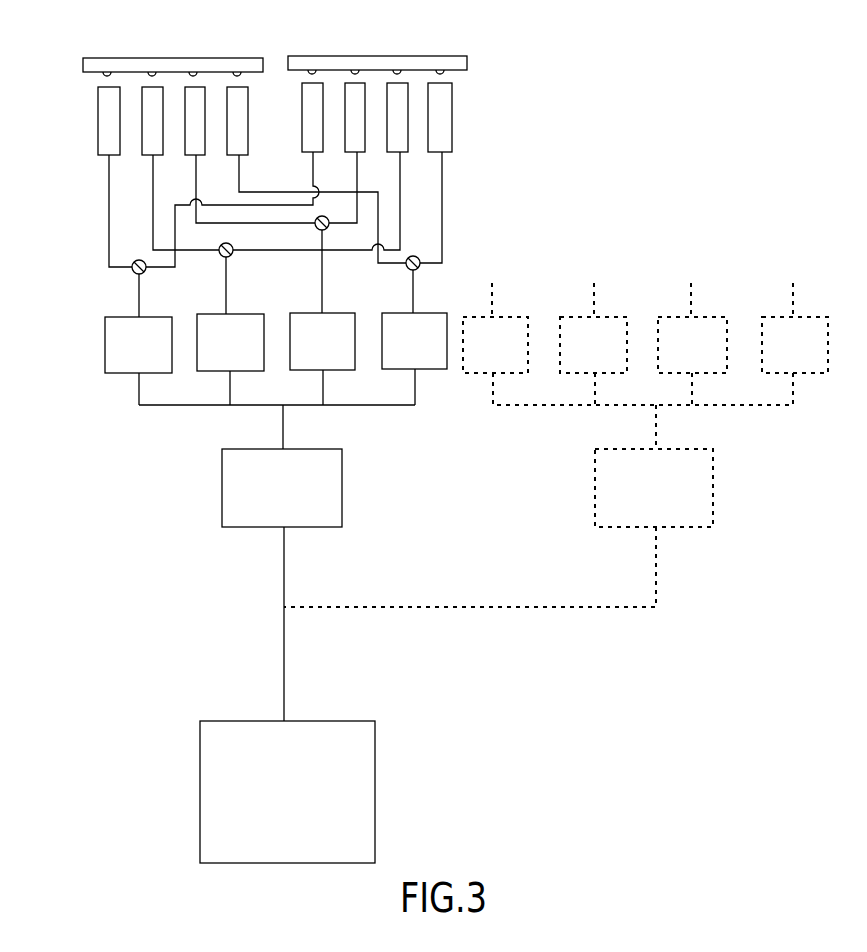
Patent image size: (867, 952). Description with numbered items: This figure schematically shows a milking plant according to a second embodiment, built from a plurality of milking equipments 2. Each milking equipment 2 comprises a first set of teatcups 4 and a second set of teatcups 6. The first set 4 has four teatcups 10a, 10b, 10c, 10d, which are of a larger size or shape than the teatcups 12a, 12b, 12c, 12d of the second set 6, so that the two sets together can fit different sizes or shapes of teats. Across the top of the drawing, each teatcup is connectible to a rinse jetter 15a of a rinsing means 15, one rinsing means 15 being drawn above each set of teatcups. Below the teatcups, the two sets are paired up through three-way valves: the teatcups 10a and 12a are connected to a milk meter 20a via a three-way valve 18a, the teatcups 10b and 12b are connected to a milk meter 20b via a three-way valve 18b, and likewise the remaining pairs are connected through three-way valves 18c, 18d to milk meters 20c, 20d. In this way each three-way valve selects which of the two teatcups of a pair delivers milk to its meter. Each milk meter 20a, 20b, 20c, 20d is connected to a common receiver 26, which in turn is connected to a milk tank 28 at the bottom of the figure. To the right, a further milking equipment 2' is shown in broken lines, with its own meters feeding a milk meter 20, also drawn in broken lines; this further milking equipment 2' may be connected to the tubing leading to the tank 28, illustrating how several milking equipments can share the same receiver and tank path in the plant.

The milking equipment 2 is at (307, 102).
The further milking equipment 2' is at (645, 353).
The first set of teatcups 4 is at (74, 137).
The second set of teatcups 6 is at (477, 132).
The teatcup 10a is at (108, 135).
The teatcup 10b is at (152, 135).
The teatcup 10c is at (196, 135).
The teatcup 10d is at (238, 135).
The teatcup 12a is at (312, 133).
The teatcup 12b is at (355, 133).
The teatcup 12c is at (398, 133).
The teatcup 12d is at (440, 133).
The rinsing means 15 is at (247, 65).
The rinse jetter 15a is at (105, 78).
The three-way valve 18a is at (132, 270).
The three-way valve 18b is at (222, 256).
The three-way valve 18c is at (316, 227).
The three-way valve 18d is at (406, 267).
The milk meter 20a is at (132, 357).
The milk meter 20b is at (226, 355).
The milk meter 20c is at (318, 353).
The milk meter 20d is at (412, 352).
The milk meter 20 is at (695, 502).
The receiver 26 is at (318, 507).
The milk tank 28 is at (340, 776).